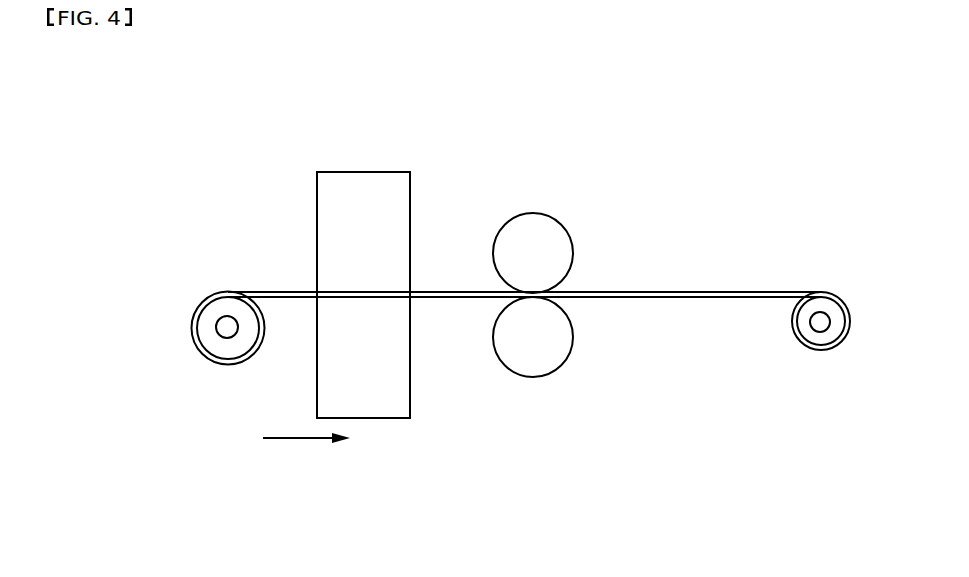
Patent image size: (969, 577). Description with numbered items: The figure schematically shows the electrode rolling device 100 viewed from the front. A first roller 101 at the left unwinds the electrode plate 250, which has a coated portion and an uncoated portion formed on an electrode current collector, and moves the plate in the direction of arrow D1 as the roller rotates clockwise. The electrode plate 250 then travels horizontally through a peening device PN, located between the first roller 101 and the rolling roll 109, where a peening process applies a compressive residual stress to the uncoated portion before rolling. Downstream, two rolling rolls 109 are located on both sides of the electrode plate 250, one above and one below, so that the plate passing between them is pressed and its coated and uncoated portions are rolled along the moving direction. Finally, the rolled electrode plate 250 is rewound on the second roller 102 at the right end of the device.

The electrode rolling device 100 is at (254, 95).
The peening device PN is at (370, 172).
The electrode plate 250 is at (271, 292).
The first roller 101 is at (228, 331).
The second roller 102 is at (822, 325).
The rolling roll 109 is at (556, 248).
The arrow D1 is at (306, 452).